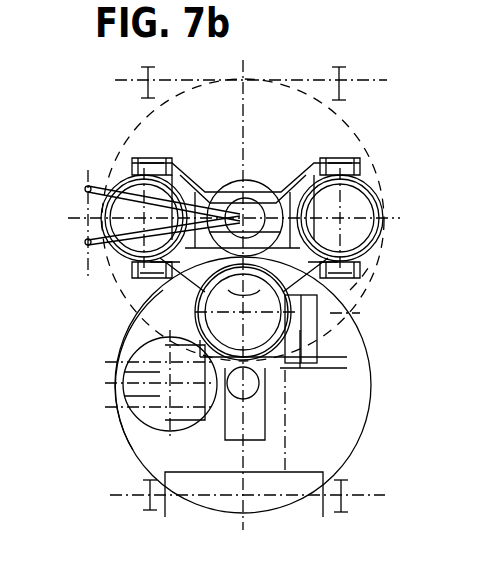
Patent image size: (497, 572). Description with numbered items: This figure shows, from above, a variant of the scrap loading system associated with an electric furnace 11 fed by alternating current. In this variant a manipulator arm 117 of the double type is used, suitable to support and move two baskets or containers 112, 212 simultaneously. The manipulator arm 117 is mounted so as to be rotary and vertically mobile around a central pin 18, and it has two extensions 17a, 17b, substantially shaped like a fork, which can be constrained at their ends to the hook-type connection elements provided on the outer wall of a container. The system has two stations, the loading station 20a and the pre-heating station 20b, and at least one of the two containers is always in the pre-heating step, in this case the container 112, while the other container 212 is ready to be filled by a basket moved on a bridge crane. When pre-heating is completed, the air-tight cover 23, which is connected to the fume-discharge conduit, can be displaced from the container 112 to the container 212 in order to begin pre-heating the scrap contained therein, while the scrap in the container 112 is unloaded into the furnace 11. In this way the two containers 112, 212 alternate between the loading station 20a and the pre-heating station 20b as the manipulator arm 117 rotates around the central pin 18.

The extension 17a is at (143, 160).
The extension 17b is at (342, 163).
The container 112 is at (118, 187).
The container 212 is at (376, 190).
The central pin 18 is at (245, 218).
The manipulator arm 117 is at (290, 190).
The air-tight cover 23 is at (117, 252).
The loading station 20a is at (85, 226).
The pre-heating station 20b is at (373, 266).
The electric furnace 11 is at (228, 334).